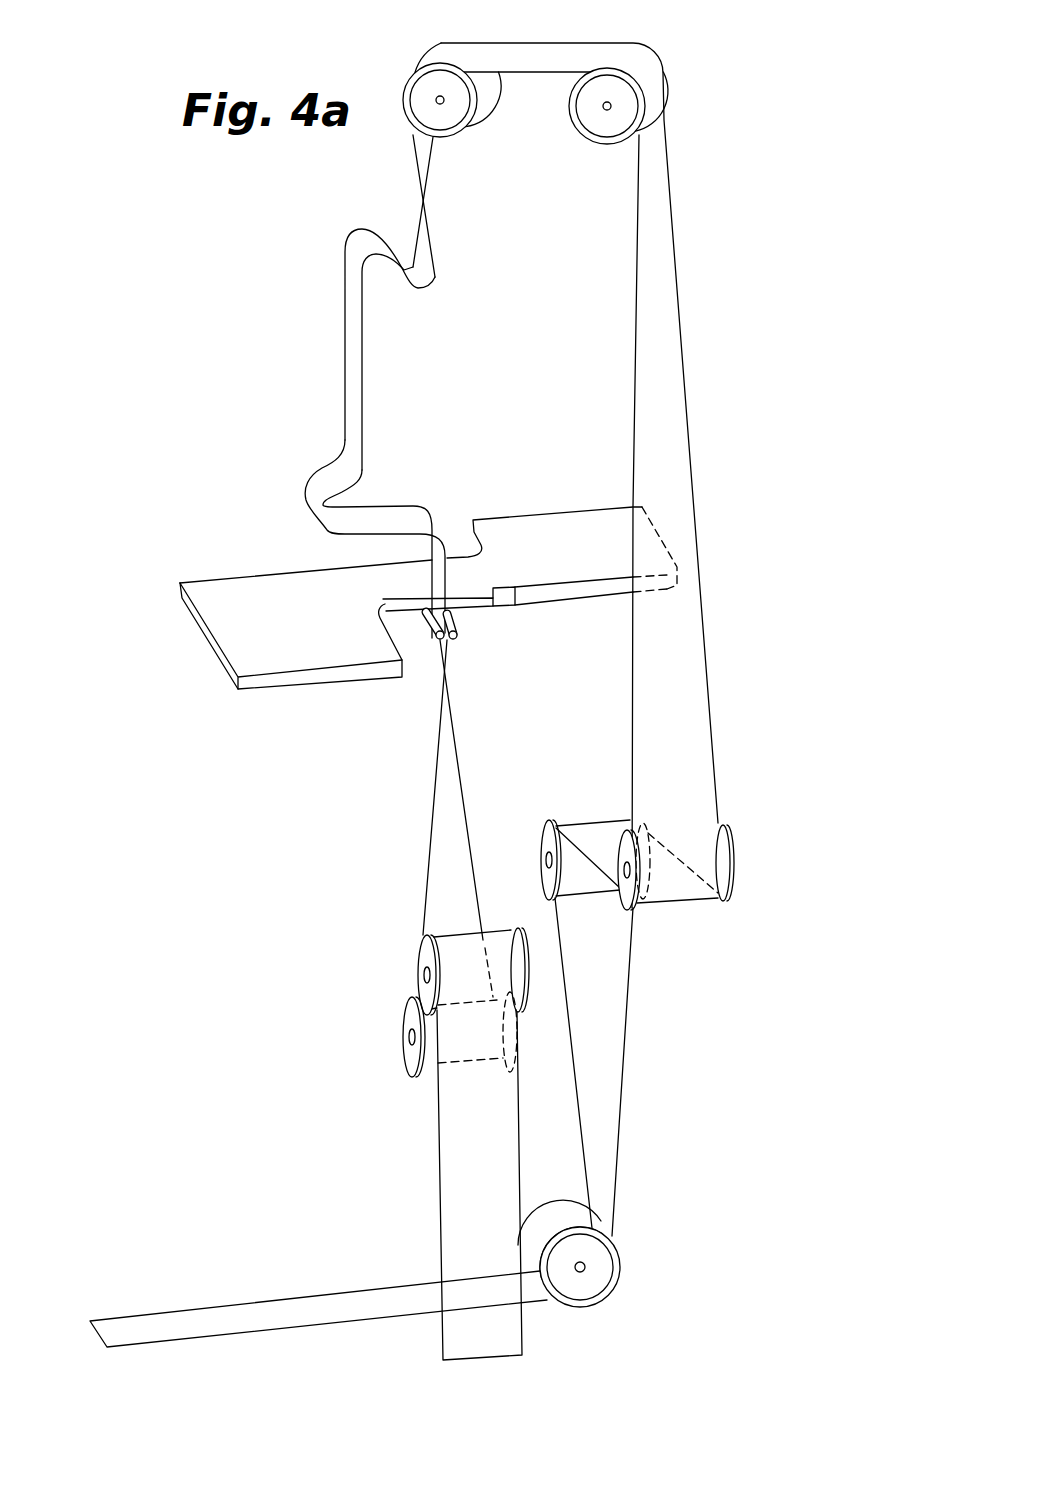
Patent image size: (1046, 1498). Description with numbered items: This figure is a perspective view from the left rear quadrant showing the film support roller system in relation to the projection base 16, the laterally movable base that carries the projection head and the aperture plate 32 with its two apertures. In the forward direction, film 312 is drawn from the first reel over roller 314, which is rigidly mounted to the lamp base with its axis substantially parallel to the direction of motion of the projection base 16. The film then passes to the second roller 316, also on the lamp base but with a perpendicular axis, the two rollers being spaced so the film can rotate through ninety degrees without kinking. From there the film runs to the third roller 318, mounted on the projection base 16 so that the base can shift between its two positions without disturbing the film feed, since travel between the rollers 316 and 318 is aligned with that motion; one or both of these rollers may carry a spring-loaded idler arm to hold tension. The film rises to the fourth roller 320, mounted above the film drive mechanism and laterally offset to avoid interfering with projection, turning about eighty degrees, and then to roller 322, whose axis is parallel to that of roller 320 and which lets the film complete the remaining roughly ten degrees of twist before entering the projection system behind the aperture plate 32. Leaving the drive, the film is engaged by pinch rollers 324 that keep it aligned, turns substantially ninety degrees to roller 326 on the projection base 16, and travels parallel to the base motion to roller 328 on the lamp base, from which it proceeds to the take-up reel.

The projection base 16 is at (220, 665).
The aperture plate 32 is at (362, 342).
The film 312 is at (293, 1299).
The roller 314 is at (623, 1270).
The second roller 316 is at (548, 820).
The third roller 318 is at (732, 860).
The fourth roller 320 is at (663, 56).
The roller 322 is at (478, 36).
The pinch rollers 324 is at (458, 638).
The roller 326 is at (408, 1054).
The roller 328 is at (420, 952).